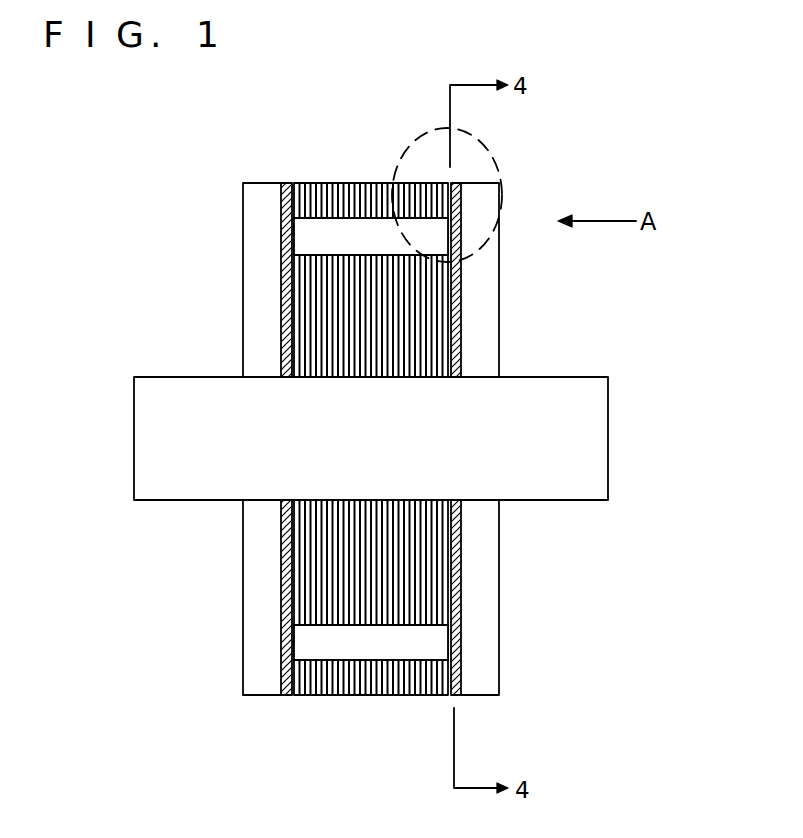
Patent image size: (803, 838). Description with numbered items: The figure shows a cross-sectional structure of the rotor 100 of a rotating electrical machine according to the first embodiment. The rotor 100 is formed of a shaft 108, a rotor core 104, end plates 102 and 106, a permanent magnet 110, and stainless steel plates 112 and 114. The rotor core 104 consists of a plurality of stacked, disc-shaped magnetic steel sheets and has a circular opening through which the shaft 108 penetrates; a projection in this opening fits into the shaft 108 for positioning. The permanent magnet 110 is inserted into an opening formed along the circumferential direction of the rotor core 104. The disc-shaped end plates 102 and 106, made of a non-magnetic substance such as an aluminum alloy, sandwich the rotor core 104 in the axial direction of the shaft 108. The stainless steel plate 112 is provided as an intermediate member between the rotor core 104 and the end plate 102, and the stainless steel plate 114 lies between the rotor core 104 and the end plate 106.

The rotor 100 is at (602, 136).
The end plate 102 is at (490, 297).
The rotor core 104 is at (447, 157).
The end plate 106 is at (255, 189).
The shaft 108 is at (593, 421).
The permanent magnet 110 is at (323, 235).
The stainless steel plate 112 is at (462, 166).
The stainless steel plate 114 is at (285, 189).